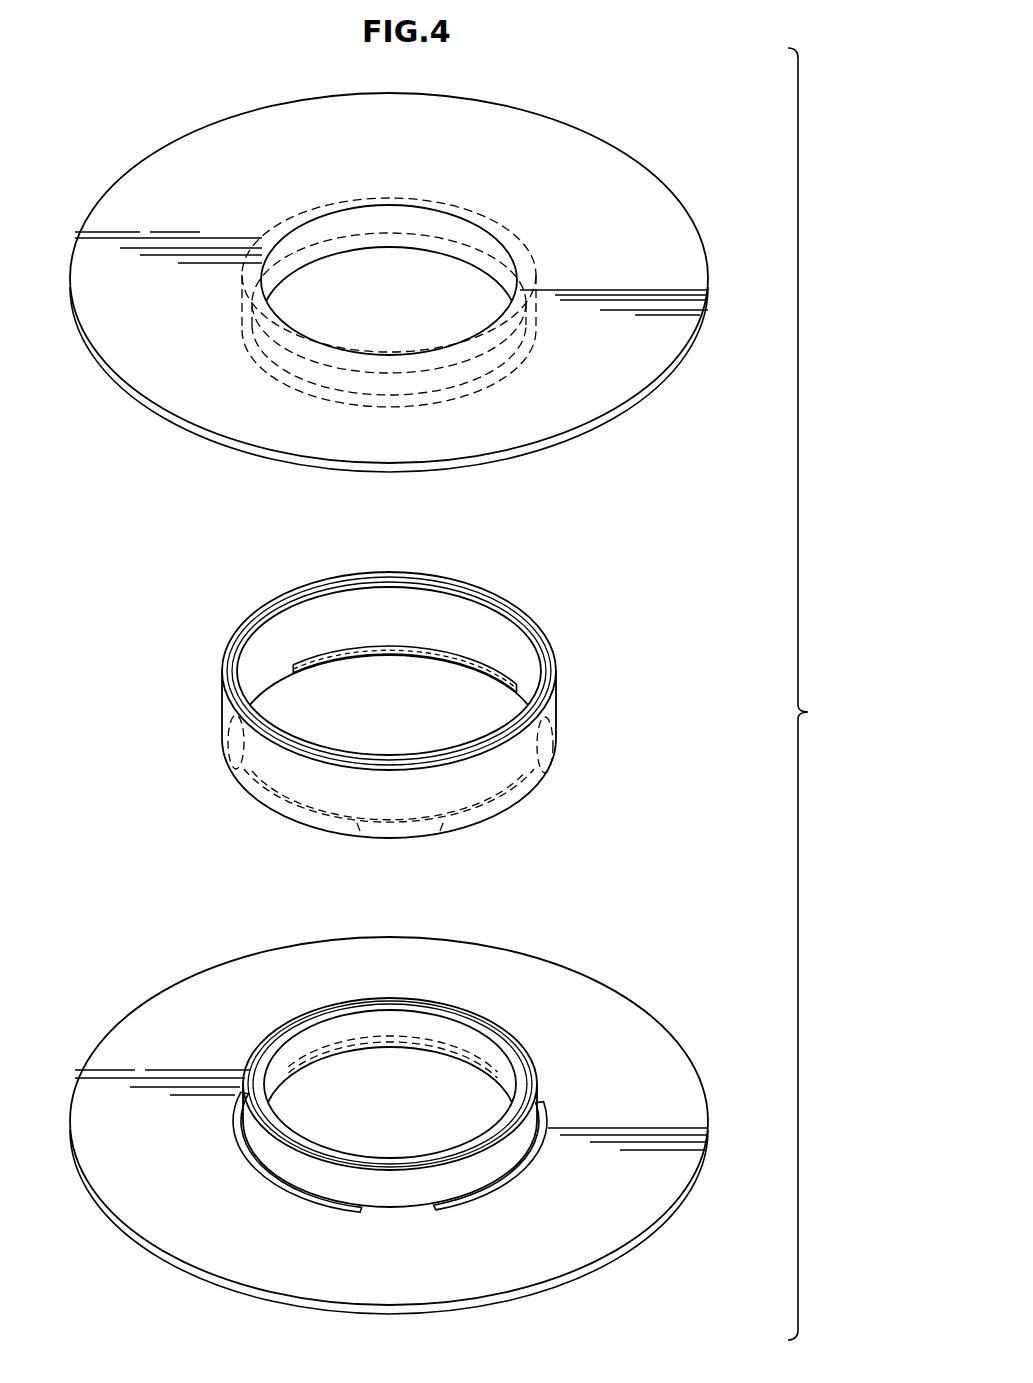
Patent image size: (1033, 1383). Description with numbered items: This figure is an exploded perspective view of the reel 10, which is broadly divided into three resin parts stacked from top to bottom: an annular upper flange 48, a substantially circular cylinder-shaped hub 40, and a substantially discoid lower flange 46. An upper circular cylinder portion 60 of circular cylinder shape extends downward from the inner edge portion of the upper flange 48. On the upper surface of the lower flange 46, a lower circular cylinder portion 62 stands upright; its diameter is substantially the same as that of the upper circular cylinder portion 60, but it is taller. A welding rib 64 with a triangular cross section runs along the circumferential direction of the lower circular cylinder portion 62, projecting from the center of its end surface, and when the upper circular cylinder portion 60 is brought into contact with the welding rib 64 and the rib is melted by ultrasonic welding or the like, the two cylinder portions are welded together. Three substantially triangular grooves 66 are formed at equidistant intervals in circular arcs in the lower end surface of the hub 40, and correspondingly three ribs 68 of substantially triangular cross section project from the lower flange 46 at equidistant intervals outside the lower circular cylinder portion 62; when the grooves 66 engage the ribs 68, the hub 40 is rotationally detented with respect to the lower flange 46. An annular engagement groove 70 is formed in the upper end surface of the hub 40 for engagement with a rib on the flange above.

The reel 10 is at (658, 126).
The upper flange 48 is at (680, 252).
The upper circular cylinder portion 60 is at (528, 340).
The hub 40 is at (557, 703).
The annular engagement groove 70 is at (487, 665).
The grooves 66 is at (485, 660).
The lower flange 46 is at (680, 1088).
The lower circular cylinder portion 62 is at (533, 1075).
The welding rib 64 is at (505, 1032).
The ribs 68 is at (450, 1018).